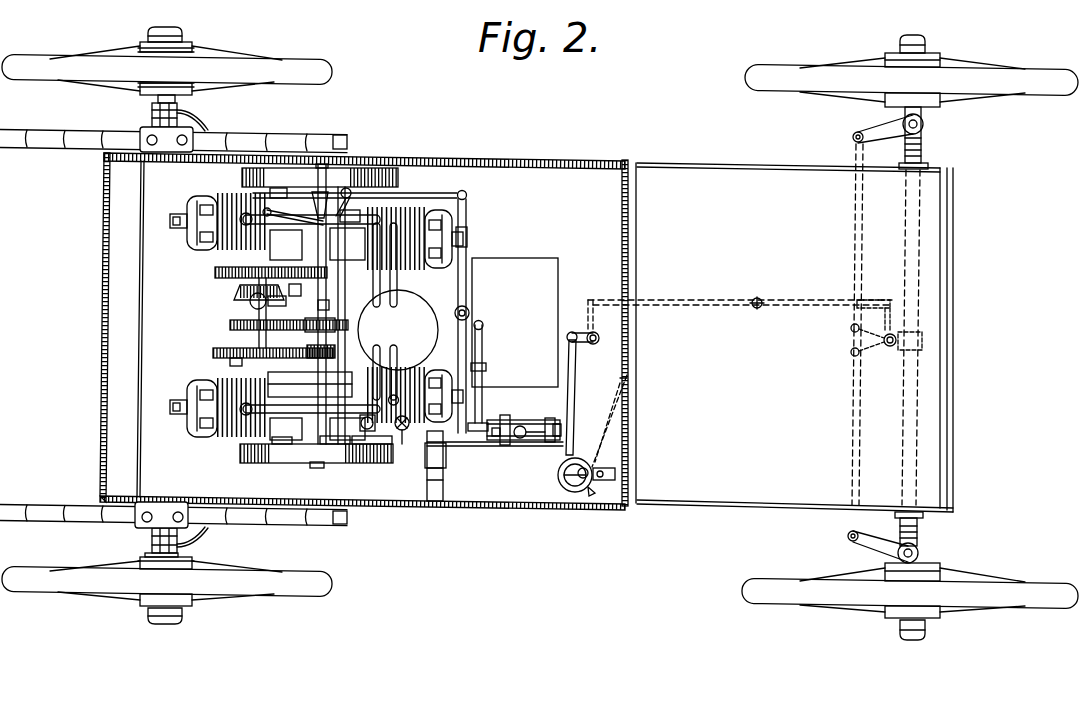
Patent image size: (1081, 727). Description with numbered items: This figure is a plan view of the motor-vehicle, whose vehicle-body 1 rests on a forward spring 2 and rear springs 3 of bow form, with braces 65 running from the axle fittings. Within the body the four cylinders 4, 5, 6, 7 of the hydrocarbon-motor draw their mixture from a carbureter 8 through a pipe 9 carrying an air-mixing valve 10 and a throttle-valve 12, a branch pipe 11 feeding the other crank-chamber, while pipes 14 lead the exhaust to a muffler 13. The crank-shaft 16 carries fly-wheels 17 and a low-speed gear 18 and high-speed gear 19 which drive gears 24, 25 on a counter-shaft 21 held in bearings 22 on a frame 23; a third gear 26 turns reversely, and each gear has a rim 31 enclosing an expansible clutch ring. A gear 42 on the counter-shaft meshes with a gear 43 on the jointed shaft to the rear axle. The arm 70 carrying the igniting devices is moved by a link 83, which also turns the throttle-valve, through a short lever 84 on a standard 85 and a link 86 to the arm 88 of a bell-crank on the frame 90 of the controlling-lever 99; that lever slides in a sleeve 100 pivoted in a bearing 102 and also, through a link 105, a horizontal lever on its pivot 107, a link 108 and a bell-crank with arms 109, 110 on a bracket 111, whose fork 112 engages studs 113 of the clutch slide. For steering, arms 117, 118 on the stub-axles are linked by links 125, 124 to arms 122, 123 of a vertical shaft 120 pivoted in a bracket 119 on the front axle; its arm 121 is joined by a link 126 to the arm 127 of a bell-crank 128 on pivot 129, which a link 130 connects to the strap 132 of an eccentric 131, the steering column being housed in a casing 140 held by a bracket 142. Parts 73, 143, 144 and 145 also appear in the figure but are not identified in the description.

The vehicle-body 1 is at (576, 162).
The forward spring 2 is at (927, 169).
The rear springs 3 is at (285, 139).
The cylinder 4 is at (431, 268).
The cylinder 5 is at (206, 250).
The cylinder 6 is at (198, 380).
The cylinder 7 is at (431, 372).
The carbureter 8 is at (312, 448).
The pipe 9 is at (483, 410).
The air-mixing valve 10 is at (404, 432).
The branch pipe 11 is at (346, 280).
The throttle-valve 12 is at (372, 428).
The muffler 13 is at (398, 330).
The pipes 14 is at (373, 278).
The crank-shaft 16 is at (323, 164).
The fly-wheels 17 is at (398, 179).
The low-speed gear 18 is at (336, 348).
The high-speed gear 19 is at (312, 332).
The counter-shaft 21 is at (259, 335).
The bearings 22 is at (258, 258).
The frame 23 is at (330, 381).
The gear 24 is at (213, 353).
The gear 25 is at (230, 326).
The gear 26 is at (215, 274).
The circular rim or flange 31 is at (240, 283).
The gear 42 is at (236, 293).
The gear 43 is at (286, 300).
The brace 65 is at (200, 134).
The arm 70 is at (338, 444).
The bearing 73 is at (292, 444).
The link 83 is at (385, 463).
The short lever 84 is at (445, 458).
The standard 85 is at (444, 473).
The link 86 is at (492, 448).
The arm of bell-crank lever 88 is at (506, 450).
The frame 90 is at (497, 428).
The lever 99 is at (555, 424).
The sleeve 100 is at (464, 300).
The bearing 102 is at (523, 427).
The link 105 is at (480, 453).
The pivot 107 is at (469, 313).
The link 108 is at (459, 195).
The bell-crank lever arm 109 is at (356, 215).
The arm of bell-crank lever 110 is at (320, 198).
The bracket 111 is at (345, 189).
The fork 112 is at (280, 188).
The studs 113 is at (265, 208).
The arm 117 is at (883, 129).
The arm 118 is at (875, 547).
The bracket 119 is at (923, 341).
The vertical shaft 120 is at (890, 347).
The arm 121 is at (896, 320).
The arm 122 is at (851, 331).
The arm 123 is at (851, 352).
The link 124 is at (853, 451).
The link 125 is at (855, 245).
The link 126 is at (752, 307).
The arm of bell-crank lever 127 is at (740, 316).
The bell-crank lever 128 is at (572, 332).
The pivot 129 is at (594, 345).
The link 130 is at (575, 392).
The eccentric 131 is at (562, 468).
The strap 132 is at (558, 484).
The casing 140 is at (588, 470).
The bracket 142 is at (617, 473).
The rod 143 is at (606, 432).
The rod 144 is at (612, 408).
The rod 145 is at (626, 372).